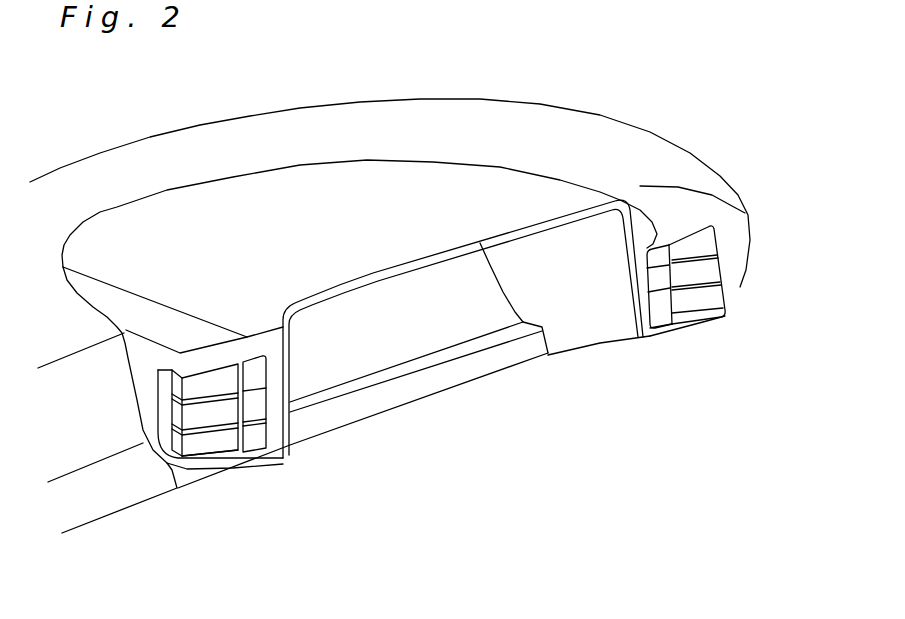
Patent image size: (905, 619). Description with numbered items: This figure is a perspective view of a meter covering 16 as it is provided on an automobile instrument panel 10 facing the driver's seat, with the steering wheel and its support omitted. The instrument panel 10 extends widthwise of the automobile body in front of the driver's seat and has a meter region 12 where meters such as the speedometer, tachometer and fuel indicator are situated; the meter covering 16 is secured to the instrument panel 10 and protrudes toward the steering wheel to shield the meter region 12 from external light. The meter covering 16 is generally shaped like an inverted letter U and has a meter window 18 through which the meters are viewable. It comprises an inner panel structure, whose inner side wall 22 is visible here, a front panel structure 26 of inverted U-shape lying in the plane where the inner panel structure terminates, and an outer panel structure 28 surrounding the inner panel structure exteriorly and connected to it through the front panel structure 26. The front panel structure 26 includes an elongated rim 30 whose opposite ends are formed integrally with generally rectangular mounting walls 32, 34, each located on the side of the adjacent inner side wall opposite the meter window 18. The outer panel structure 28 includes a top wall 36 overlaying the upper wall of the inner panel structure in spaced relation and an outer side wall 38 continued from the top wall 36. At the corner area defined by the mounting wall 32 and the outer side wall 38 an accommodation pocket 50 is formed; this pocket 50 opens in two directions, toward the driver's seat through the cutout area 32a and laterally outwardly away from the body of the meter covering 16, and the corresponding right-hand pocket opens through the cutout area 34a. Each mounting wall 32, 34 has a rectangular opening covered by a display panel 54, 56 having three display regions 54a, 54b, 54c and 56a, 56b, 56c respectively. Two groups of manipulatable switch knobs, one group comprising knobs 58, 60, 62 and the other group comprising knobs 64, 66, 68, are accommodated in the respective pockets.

The automobile instrument panel 10 is at (390, 158).
The meter region 12 is at (416, 398).
The meter covering 16 is at (309, 238).
The meter window 18 is at (472, 313).
The inner side wall 22 is at (518, 360).
The front panel structure 26 is at (463, 313).
The outer panel structure 28 is at (435, 191).
The rim 30 is at (463, 243).
The mounting wall 32 is at (363, 448).
The cutout area 32a is at (220, 477).
The mounting wall 34 is at (600, 406).
The cutout area 34a is at (708, 396).
The top wall 36 is at (359, 148).
The outer side wall 38 is at (103, 418).
The accommodation pocket 50 is at (141, 410).
The display panel 54 is at (224, 341).
The display region 54a is at (316, 349).
The display region 54b is at (316, 379).
The display region 54c is at (284, 504).
The display panel 56 is at (666, 361).
The display region 56a is at (598, 265).
The display region 56b is at (604, 298).
The display region 56c is at (616, 330).
The switch knob 58 is at (195, 355).
The switch knob 60 is at (141, 436).
The switch knob 62 is at (188, 516).
The switch knob 64 is at (734, 245).
The switch knob 66 is at (736, 258).
The switch knob 68 is at (736, 318).